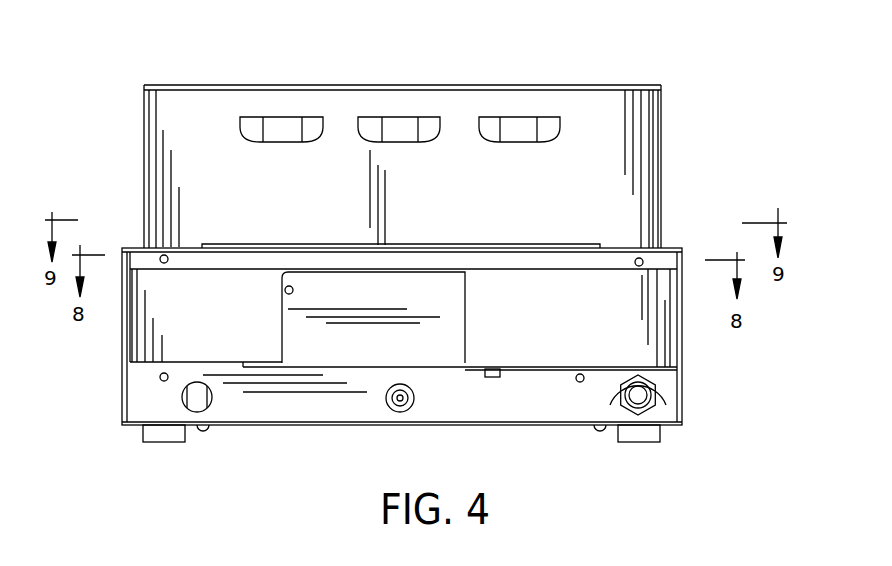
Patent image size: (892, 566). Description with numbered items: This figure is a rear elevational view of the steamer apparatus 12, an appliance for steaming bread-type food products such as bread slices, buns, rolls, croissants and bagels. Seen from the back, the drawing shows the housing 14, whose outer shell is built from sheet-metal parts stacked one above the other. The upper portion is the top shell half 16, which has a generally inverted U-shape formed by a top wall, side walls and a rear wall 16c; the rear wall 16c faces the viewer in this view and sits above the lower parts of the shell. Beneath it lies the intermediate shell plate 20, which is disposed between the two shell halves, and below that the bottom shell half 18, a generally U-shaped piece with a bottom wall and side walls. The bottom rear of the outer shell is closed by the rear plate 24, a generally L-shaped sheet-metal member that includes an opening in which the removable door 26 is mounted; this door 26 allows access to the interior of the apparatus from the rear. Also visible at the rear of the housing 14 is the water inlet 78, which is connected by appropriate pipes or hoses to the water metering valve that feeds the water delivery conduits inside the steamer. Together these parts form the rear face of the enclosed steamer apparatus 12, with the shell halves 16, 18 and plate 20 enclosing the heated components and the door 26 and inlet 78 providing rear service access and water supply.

The steamer apparatus 12 is at (695, 110).
The housing 14 is at (690, 240).
The top shell half 16 is at (177, 93).
The rear wall 16c is at (585, 108).
The bottom shell half 18 is at (146, 262).
The intermediate shell plate 20 is at (552, 262).
The rear plate 24 is at (640, 337).
The removable door 26 is at (300, 343).
The water inlet 78 is at (400, 412).